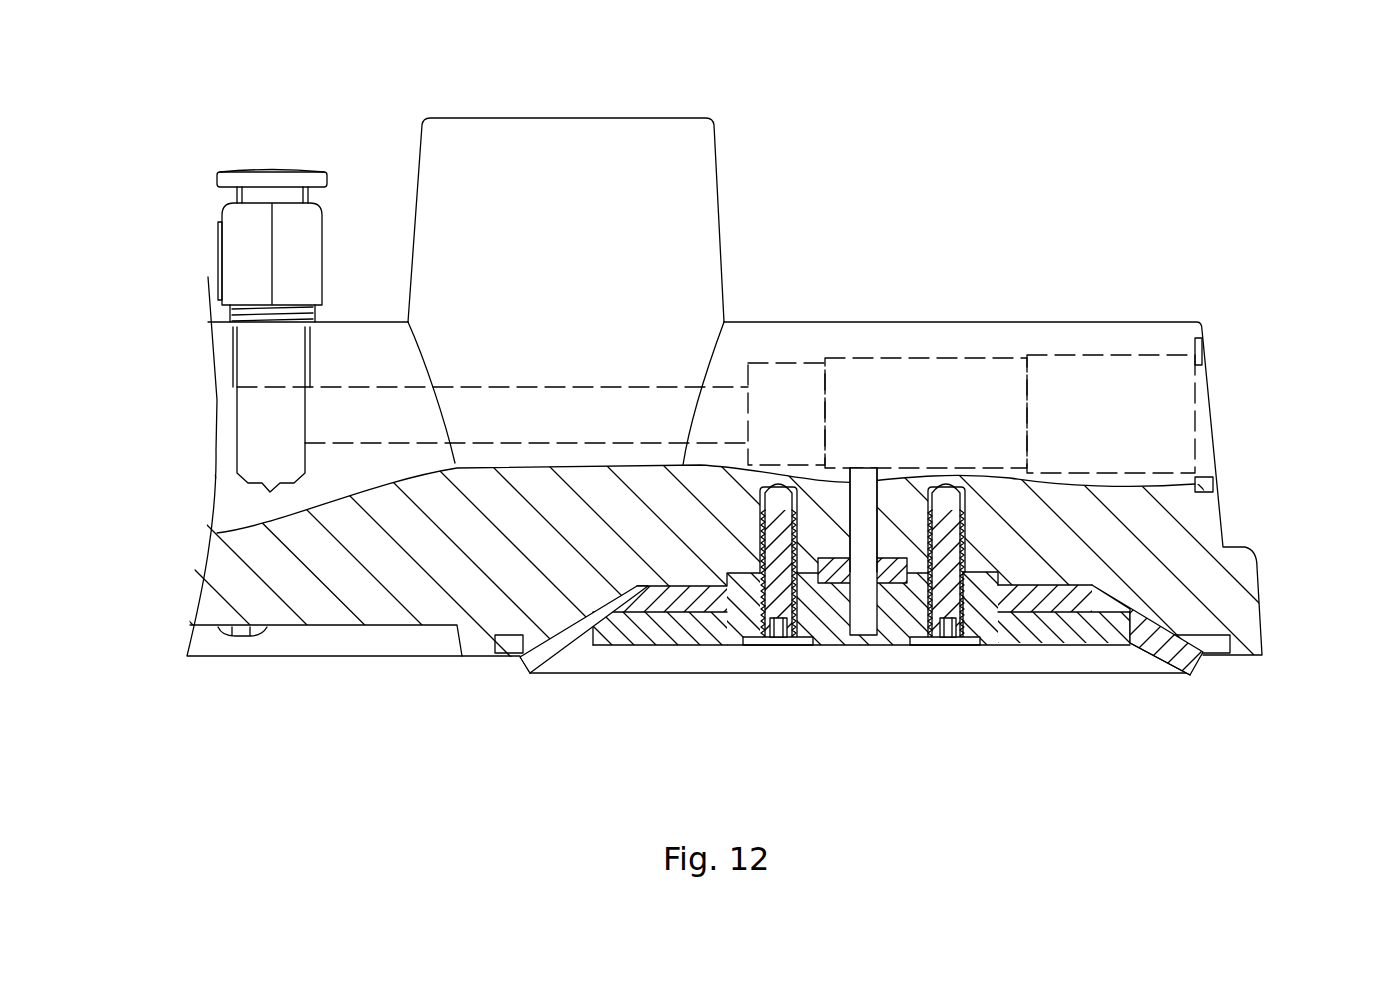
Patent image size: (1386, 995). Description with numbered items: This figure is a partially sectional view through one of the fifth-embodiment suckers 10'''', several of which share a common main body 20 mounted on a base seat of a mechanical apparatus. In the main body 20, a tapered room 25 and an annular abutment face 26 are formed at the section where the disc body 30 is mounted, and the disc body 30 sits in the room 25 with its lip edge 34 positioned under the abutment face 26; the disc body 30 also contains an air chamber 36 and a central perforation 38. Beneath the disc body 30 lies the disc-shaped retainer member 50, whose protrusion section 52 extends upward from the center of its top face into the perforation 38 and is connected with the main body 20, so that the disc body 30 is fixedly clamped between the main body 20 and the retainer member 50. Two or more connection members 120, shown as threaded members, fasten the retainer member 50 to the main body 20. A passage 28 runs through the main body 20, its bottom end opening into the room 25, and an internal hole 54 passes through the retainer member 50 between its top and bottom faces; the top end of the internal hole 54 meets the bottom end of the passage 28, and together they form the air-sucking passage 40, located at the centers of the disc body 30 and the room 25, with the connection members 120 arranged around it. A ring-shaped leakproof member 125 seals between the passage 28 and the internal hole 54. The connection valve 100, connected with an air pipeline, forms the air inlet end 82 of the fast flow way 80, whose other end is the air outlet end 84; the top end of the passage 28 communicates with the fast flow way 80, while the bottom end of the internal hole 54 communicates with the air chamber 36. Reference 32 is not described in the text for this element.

The sucker 10'''' is at (799, 204).
The main body 20 is at (1140, 310).
The tapered room 25 is at (1095, 587).
The annular abutment face 26 is at (510, 640).
The passage 28 is at (869, 525).
The disc body 30 is at (1160, 665).
The flange 32 is at (1120, 615).
The lip edge 34 is at (548, 652).
The air chamber 36 is at (898, 655).
The perforation 38 is at (690, 627).
The air-sucking passage 40 is at (880, 562).
The retainer member 50 is at (1015, 647).
The protrusion section 52 is at (743, 600).
The internal hole 54 is at (862, 638).
The fast flow way 80 is at (848, 355).
The air inlet end 82 is at (277, 170).
The air outlet end 84 is at (1200, 367).
The connection valve 100 is at (213, 235).
The connection members 120 is at (762, 624).
The ring-shaped leakproof member 125 is at (830, 583).